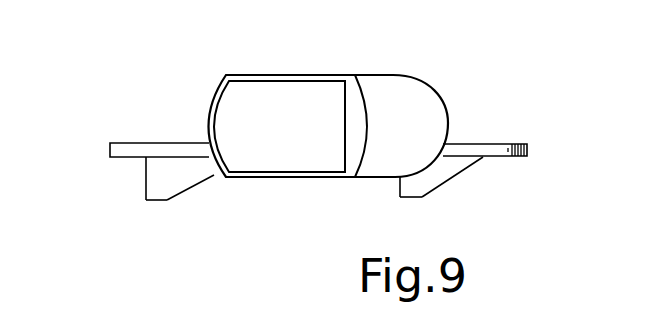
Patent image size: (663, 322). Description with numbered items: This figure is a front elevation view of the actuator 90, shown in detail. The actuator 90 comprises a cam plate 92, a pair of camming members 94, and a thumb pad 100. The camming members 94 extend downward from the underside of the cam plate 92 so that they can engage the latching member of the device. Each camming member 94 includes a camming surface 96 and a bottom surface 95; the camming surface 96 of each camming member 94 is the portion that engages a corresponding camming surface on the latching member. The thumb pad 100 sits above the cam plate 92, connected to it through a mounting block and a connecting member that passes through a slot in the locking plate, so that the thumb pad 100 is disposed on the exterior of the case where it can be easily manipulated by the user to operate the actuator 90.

The actuator 90 is at (158, 90).
The thumb pad 100 is at (293, 110).
The cam plate 92 is at (467, 142).
The camming member 94 is at (152, 172).
The bottom surface 95 is at (145, 202).
The camming surface 96 is at (184, 190).